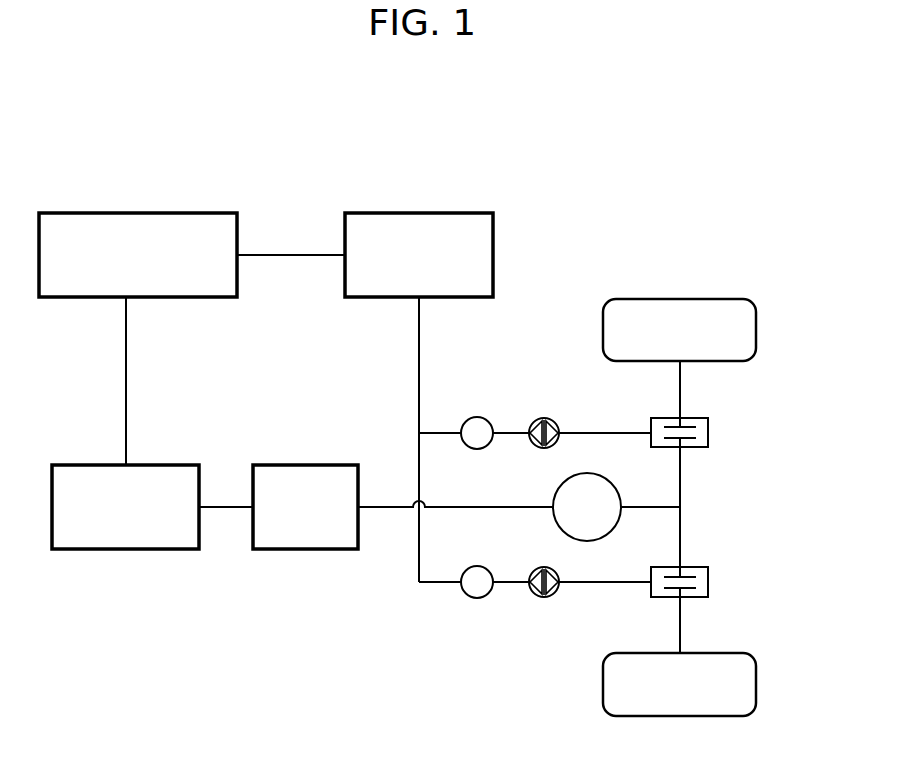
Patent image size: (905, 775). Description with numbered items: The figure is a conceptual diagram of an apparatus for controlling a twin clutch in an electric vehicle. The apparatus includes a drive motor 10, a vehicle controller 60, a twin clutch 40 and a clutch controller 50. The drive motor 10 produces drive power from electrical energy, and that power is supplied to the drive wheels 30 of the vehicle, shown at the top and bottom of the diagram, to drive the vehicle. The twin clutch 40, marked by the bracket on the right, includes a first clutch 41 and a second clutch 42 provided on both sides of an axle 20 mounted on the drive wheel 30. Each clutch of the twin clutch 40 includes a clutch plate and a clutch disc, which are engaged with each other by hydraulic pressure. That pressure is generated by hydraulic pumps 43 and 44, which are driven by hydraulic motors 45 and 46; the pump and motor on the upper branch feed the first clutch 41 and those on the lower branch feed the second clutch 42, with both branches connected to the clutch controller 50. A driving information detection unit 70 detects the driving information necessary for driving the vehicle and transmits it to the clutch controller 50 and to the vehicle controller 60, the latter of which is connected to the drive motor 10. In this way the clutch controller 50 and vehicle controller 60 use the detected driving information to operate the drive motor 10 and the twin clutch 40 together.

The drive motor 10 is at (306, 551).
The axle 20 is at (682, 624).
The drive wheel 30 is at (756, 330).
The twin clutch 40 is at (769, 420).
The first clutch 41 is at (708, 433).
The second clutch 42 is at (708, 583).
The hydraulic pump 43 is at (544, 418).
The hydraulic pump 44 is at (544, 597).
The hydraulic motor 45 is at (477, 417).
The hydraulic motor 46 is at (477, 598).
The clutch controller 50 is at (419, 212).
The vehicle controller 60 is at (122, 551).
The driving information detection unit 70 is at (135, 212).